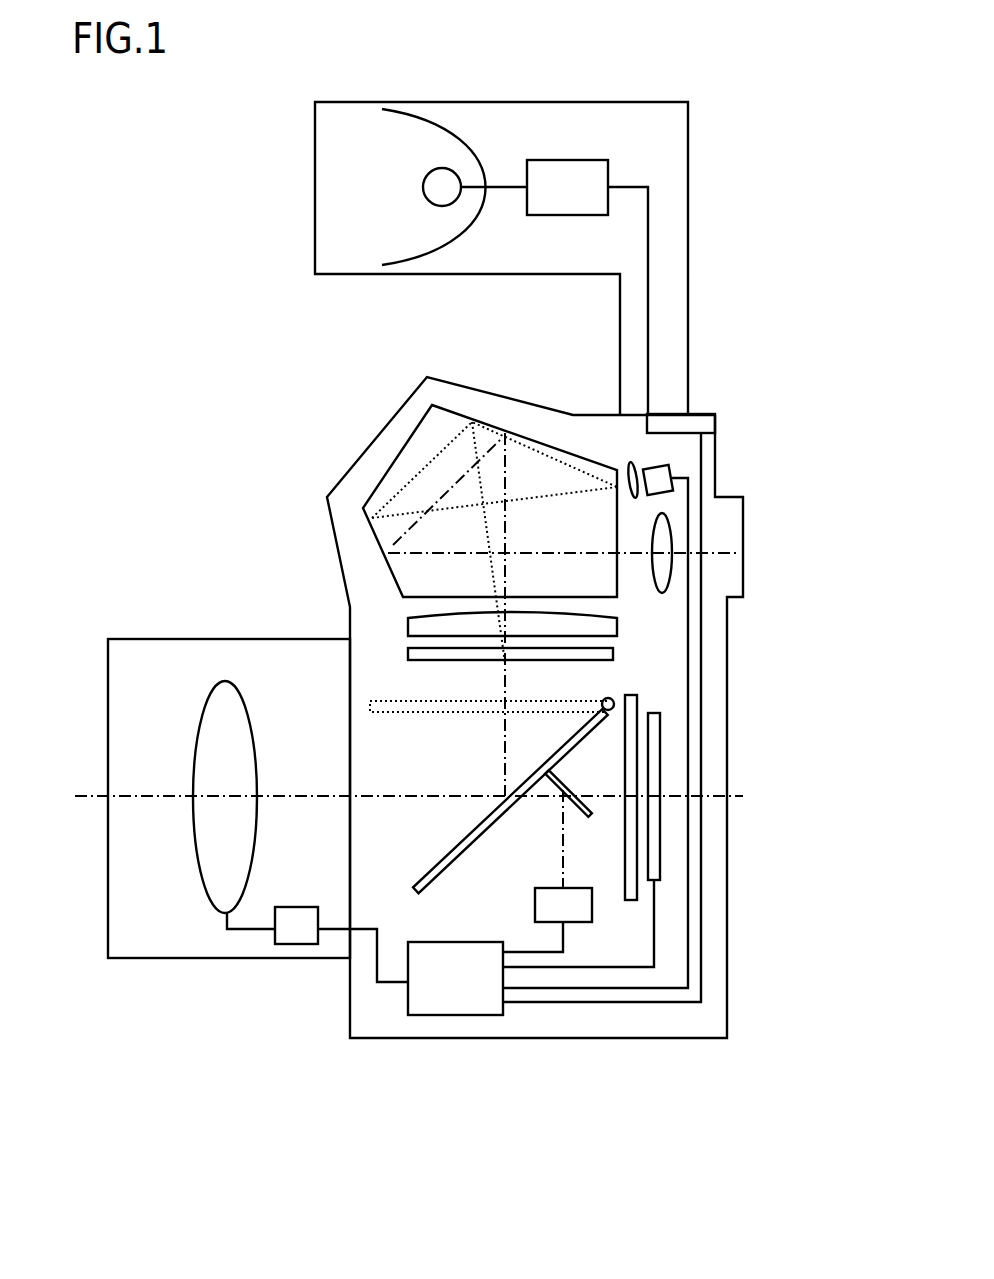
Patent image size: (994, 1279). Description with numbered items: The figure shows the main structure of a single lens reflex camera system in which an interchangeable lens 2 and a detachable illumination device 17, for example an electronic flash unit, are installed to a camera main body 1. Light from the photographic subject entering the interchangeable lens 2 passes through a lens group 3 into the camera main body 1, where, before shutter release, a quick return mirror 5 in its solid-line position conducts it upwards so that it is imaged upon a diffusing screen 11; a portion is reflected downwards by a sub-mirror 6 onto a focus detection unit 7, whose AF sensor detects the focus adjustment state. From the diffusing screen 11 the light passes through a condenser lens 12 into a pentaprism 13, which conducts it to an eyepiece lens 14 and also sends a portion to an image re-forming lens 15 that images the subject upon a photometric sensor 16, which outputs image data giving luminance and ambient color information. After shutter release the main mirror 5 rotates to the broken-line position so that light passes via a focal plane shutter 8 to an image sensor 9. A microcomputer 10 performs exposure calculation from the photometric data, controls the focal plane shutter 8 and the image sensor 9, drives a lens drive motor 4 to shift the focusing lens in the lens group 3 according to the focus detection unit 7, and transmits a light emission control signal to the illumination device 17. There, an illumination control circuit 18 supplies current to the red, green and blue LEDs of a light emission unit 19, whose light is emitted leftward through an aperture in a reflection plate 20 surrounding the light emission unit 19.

The camera main body 1 is at (383, 1040).
The interchangeable lens 2 is at (132, 640).
The lens group 3 is at (210, 903).
The lens drive motor 4 is at (285, 944).
The quick return mirror 5 is at (455, 842).
The sub-mirror 6 is at (553, 787).
The focus detection unit 7 is at (575, 922).
The focal plane shutter 8 is at (625, 827).
The image sensor 9 is at (665, 760).
The microcomputer 10 is at (472, 1015).
The diffusing screen 11 is at (407, 653).
The condenser lens 12 is at (407, 628).
The pentaprism 13 is at (385, 470).
The eyepiece lens 14 is at (667, 587).
The image re-forming lens 15 is at (717, 435).
The photometric sensor 16 is at (672, 462).
The illumination device 17 is at (687, 183).
The illumination control circuit 18 is at (555, 215).
The light emission unit 19 is at (445, 166).
The reflection plate 20 is at (433, 117).